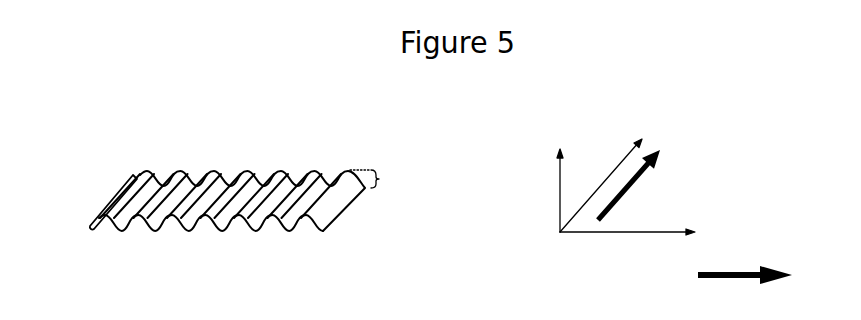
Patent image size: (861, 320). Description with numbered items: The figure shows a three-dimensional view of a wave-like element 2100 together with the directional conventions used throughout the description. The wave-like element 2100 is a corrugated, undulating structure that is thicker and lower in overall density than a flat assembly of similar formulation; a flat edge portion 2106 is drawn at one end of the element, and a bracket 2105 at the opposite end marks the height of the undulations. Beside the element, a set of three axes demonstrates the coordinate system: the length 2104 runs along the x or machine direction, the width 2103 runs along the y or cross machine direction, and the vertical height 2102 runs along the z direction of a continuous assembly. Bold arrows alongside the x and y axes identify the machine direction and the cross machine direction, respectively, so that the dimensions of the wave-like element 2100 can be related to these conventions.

The wave-like element 2100 is at (188, 169).
The vertical height 2102 is at (559, 198).
The width 2103 is at (613, 168).
The length 2104 is at (601, 233).
The corrugation height 2105 is at (390, 182).
The flat edge portion 2106 is at (58, 232).